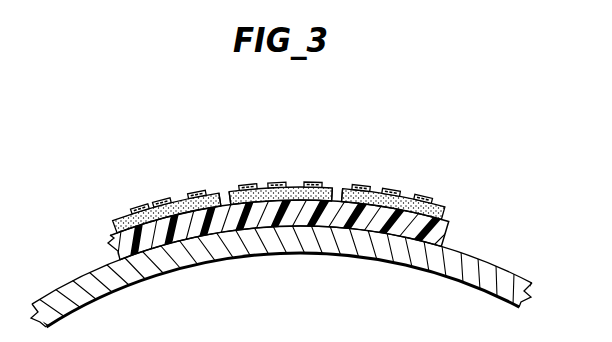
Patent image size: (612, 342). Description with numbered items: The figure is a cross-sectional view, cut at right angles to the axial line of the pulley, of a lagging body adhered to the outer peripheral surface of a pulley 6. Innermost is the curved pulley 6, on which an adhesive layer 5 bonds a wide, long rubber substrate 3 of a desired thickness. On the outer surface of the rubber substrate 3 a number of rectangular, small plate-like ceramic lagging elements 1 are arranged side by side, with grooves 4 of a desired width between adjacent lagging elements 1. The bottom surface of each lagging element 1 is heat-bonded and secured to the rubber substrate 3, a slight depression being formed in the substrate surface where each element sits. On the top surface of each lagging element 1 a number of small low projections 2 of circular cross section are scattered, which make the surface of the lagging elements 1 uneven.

The lagging element 1 is at (180, 207).
The small projection 2 is at (161, 199).
The rubber substrate 3 is at (447, 223).
The groove 4 is at (223, 197).
The adhesive layer 5 is at (312, 208).
The pulley 6 is at (177, 258).